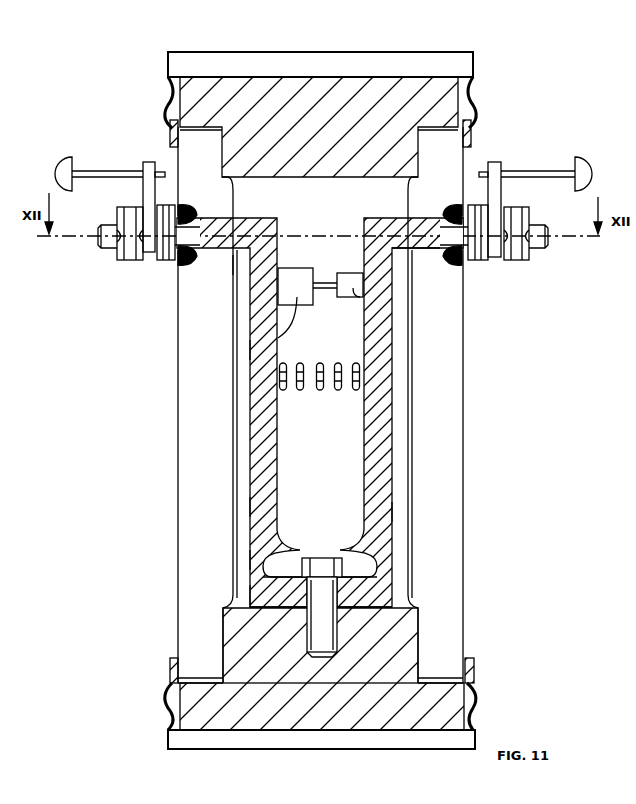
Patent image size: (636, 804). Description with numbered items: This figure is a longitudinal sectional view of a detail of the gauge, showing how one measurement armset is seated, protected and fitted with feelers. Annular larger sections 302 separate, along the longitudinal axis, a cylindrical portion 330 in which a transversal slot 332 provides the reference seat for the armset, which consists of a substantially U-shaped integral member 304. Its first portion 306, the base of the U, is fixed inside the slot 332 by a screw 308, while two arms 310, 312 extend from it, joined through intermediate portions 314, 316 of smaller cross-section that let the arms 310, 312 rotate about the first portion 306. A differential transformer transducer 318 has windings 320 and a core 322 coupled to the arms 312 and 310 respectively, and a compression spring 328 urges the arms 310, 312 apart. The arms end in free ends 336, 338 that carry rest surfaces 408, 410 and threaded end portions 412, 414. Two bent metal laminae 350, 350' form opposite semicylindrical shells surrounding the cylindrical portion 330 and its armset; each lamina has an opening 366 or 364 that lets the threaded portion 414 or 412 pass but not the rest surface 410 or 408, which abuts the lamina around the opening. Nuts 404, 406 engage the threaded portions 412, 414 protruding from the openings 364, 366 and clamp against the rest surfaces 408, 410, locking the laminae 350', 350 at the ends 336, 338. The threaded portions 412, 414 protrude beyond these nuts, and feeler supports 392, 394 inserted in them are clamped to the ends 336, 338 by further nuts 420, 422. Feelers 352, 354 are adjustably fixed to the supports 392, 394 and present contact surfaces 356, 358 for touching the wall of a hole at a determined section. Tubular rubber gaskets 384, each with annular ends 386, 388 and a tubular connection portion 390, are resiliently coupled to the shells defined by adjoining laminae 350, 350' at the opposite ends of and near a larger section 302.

The larger section 302 is at (440, 113).
The integral member 304 is at (410, 472).
The first portion 306 is at (252, 595).
The screw 308 is at (250, 507).
The arm 310 is at (393, 483).
The arm 312 is at (263, 423).
The intermediate portion 314 is at (400, 573).
The intermediate portion 316 is at (252, 560).
The differential transformer transducer 318 is at (334, 308).
The windings 320 is at (278, 335).
The core 322 is at (393, 340).
The compression spring 328 is at (248, 350).
The cylindrical portion 330 is at (417, 638).
The transversal slot 332 is at (400, 512).
The free end 336 is at (425, 258).
The free end 338 is at (236, 265).
The metal lamina 350 is at (183, 405).
The metal lamina 350' is at (460, 405).
The feeler 352 is at (549, 177).
The feeler 354 is at (102, 177).
The contact surface 356 is at (594, 176).
The contact surface 358 is at (60, 178).
The opening 364 is at (463, 203).
The opening 366 is at (188, 208).
The tubular rubber gasket 384 is at (520, 57).
The annular end 386 is at (178, 62).
The annular end 388 is at (172, 130).
The tubular connection portion 390 is at (170, 93).
The feeler support 392 is at (496, 195).
The feeler support 394 is at (147, 193).
The nut 404 is at (464, 260).
The nut 406 is at (165, 256).
The rest surface 408 is at (447, 258).
The rest surface 410 is at (183, 263).
The threaded end portion 412 is at (548, 238).
The threaded end portion 414 is at (100, 243).
The nut 420 is at (516, 260).
The nut 422 is at (128, 256).